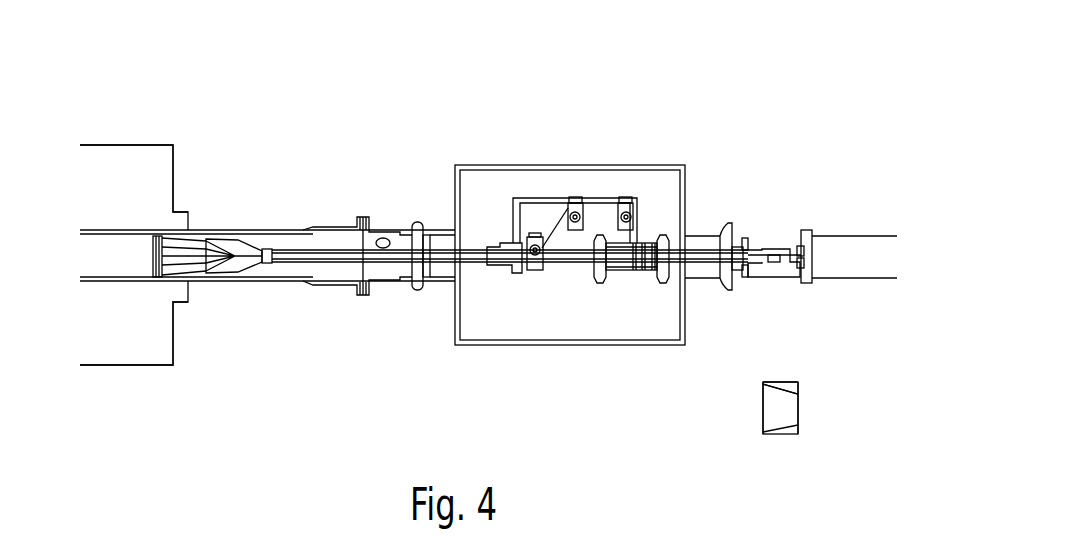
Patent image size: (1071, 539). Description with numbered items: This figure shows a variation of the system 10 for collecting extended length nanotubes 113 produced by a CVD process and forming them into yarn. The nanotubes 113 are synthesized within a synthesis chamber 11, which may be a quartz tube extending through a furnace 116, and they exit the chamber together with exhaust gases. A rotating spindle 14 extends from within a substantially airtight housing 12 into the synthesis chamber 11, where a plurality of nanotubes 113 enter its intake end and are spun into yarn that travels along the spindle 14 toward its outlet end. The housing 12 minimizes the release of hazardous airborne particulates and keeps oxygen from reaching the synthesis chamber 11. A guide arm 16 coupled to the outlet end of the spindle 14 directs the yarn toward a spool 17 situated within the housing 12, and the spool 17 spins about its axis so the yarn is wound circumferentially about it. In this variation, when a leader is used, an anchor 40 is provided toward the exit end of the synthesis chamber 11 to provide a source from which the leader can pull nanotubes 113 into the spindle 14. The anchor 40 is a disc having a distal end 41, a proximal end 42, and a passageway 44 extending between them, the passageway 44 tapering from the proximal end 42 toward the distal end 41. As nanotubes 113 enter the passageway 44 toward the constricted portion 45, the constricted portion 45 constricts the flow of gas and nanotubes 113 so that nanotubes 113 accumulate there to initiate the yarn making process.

The system 10 is at (688, 88).
The synthesis chamber 11 is at (203, 186).
The housing 12 is at (505, 168).
The rotating spindle 14 is at (293, 263).
The guide arm 16 is at (550, 197).
The spool 17 is at (630, 275).
The anchor 40 is at (153, 256).
The distal end 41 is at (798, 428).
The proximal end 42 is at (765, 385).
The passageway 44 is at (770, 410).
The constricted portion 45 is at (790, 397).
The extended length nanotubes 113 is at (187, 240).
The furnace 116 is at (148, 144).